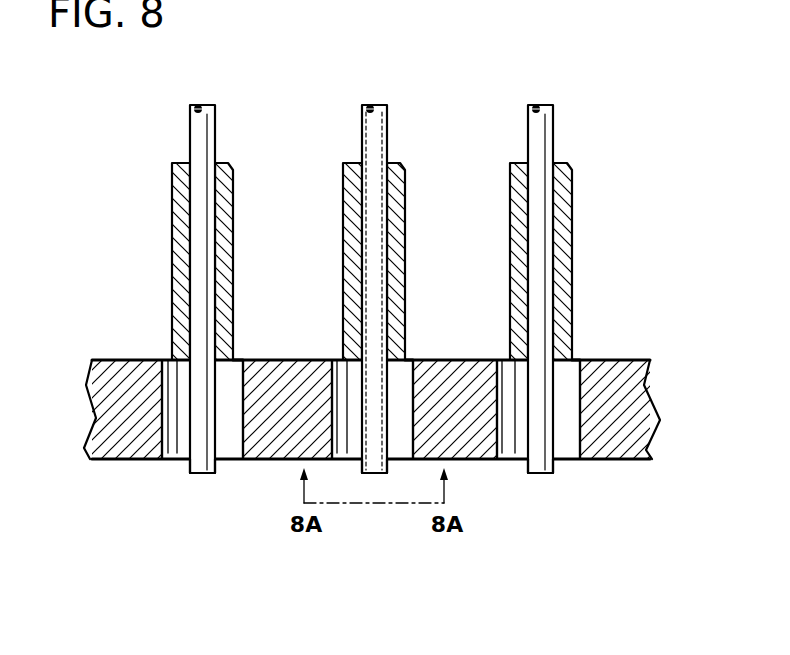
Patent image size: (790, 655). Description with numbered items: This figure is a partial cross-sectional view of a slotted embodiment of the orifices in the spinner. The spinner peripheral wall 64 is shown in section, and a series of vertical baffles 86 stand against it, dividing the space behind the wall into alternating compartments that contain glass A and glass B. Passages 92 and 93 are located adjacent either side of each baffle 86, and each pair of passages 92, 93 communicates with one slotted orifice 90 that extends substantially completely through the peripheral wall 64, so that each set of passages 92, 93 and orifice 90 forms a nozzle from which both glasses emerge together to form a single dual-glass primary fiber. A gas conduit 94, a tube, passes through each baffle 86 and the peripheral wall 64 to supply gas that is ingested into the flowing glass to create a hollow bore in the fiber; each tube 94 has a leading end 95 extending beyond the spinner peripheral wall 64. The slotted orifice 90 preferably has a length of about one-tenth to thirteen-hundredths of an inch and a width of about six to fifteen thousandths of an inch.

The spinner peripheral wall 64 is at (477, 461).
The vertical baffles 86 is at (228, 215).
The orifices 90 is at (173, 461).
The passages 92 is at (165, 362).
The passages 93 is at (236, 364).
The gas conduit 94 is at (190, 118).
The leading end 95 is at (198, 473).